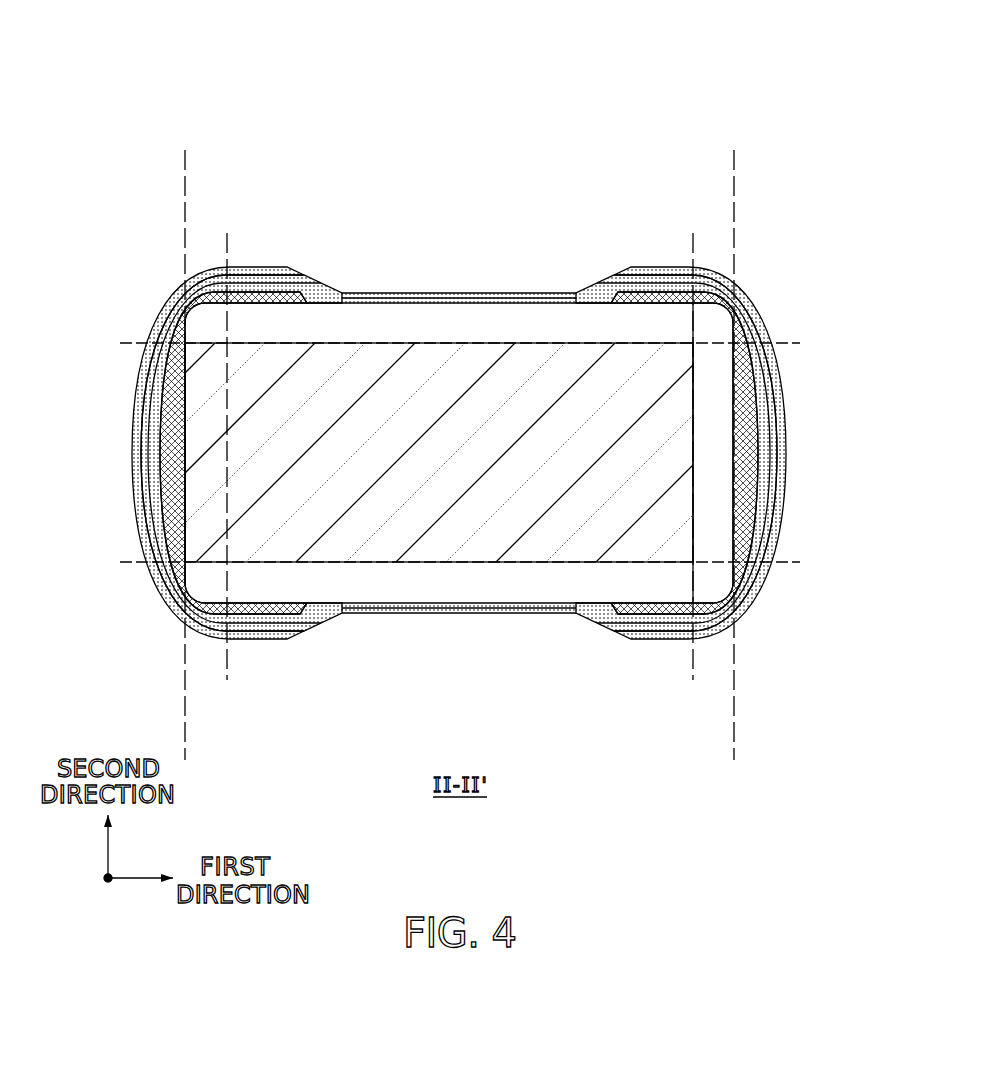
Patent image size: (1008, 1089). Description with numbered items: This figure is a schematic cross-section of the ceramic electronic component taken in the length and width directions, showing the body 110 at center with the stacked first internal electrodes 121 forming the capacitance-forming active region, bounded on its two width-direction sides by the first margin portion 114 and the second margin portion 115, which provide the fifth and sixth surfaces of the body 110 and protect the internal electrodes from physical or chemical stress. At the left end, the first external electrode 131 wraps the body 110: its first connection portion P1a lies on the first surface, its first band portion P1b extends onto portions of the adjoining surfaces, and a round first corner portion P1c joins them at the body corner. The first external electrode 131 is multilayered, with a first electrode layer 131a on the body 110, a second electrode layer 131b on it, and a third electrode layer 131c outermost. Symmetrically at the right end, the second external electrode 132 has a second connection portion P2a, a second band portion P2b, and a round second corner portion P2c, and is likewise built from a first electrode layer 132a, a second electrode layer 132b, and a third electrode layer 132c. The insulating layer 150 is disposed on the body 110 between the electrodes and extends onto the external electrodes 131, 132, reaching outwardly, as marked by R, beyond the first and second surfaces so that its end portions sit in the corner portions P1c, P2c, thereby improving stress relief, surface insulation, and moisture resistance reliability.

The body 110 is at (518, 305).
The first margin portion 114 is at (395, 332).
The second margin portion 115 is at (414, 588).
The first internal electrode 121 is at (460, 360).
The first external electrode 131 is at (193, 325).
The first electrode layer 131a is at (167, 425).
The second electrode layer 131b is at (150, 455).
The third electrode layer 131c is at (138, 481).
The second external electrode 132 is at (726, 325).
The first electrode layer 132a is at (760, 425).
The second electrode layer 132b is at (774, 455).
The third electrode layer 132c is at (784, 481).
The insulating layer 150 is at (522, 612).
The first connection portion P1a is at (130, 515).
The first band portion P1b is at (260, 258).
The first corner portion P1c is at (158, 305).
The second connection portion P2a is at (790, 515).
The second band portion P2b is at (669, 258).
The second corner portion P2c is at (760, 305).
The outward extension region R is at (185, 178).